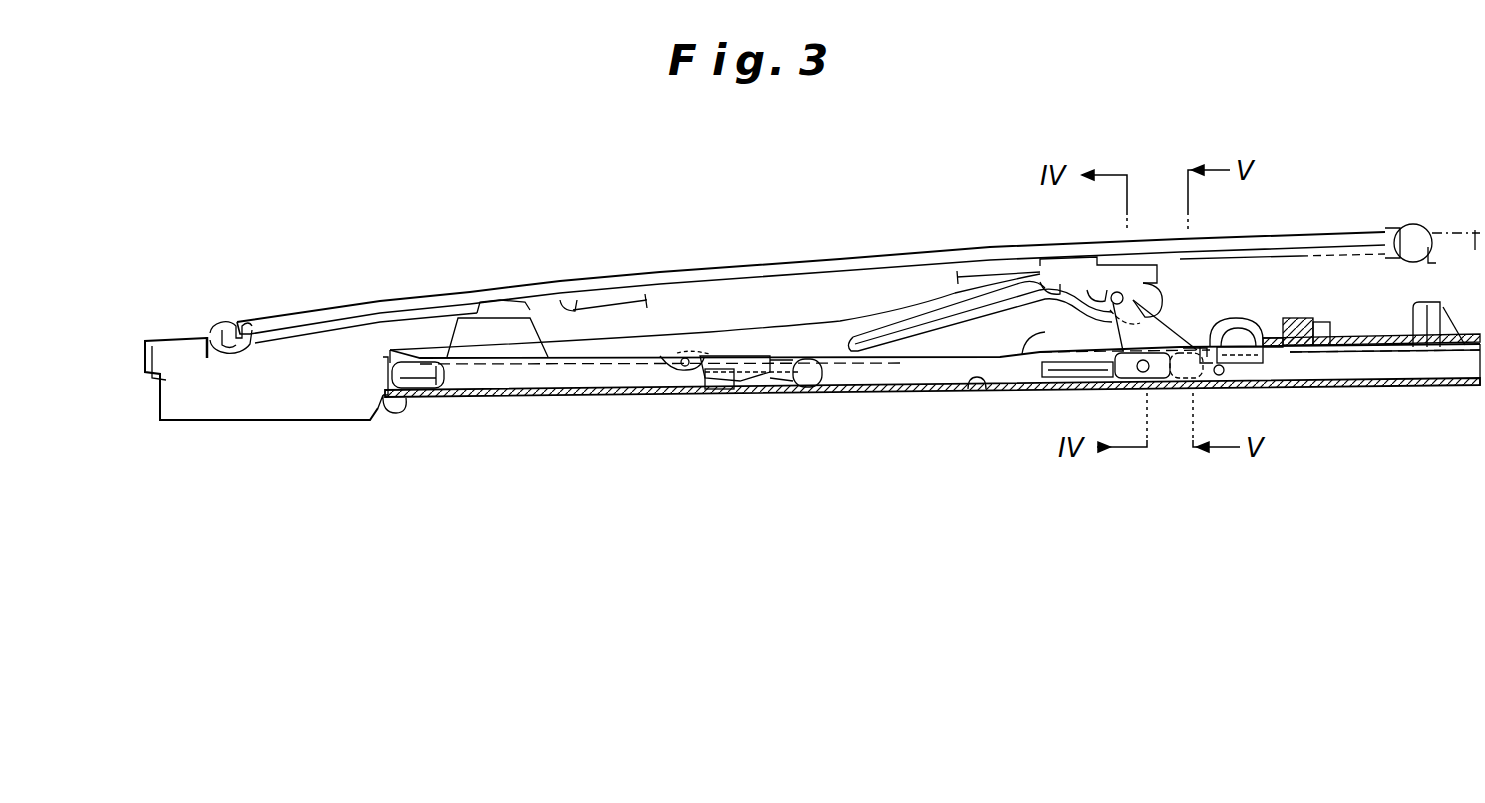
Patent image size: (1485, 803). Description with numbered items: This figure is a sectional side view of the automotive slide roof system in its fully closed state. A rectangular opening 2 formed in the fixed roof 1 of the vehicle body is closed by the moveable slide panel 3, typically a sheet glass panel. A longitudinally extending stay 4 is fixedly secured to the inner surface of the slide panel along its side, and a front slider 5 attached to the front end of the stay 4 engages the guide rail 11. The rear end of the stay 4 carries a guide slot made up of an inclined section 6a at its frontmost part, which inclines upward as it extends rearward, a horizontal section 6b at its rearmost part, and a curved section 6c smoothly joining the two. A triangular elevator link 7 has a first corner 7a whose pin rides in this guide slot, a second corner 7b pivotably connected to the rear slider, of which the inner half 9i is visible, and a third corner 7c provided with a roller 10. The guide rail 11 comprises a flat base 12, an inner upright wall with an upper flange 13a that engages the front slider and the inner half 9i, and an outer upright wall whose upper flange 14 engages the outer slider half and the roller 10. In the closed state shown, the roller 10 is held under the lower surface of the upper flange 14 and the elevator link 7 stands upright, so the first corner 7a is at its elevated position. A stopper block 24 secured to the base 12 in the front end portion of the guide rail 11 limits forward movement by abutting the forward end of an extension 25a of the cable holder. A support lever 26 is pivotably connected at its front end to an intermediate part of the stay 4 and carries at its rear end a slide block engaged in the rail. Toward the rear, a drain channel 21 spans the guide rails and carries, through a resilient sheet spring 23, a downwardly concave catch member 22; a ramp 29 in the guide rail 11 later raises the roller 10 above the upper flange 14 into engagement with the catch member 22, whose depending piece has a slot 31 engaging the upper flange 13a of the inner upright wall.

The fixed roof 1 is at (168, 341).
The rectangular opening 2 is at (218, 333).
The slide panel 3 is at (393, 302).
The stay 4 is at (637, 358).
The front slider 5 is at (377, 404).
The inclined section 6a is at (907, 327).
The horizontal section 6b is at (1096, 290).
The curved section 6c is at (1047, 285).
The elevator link 7 is at (1162, 326).
The first corner 7a is at (1122, 292).
The second corner 7b is at (1146, 375).
The third corner 7c is at (1198, 380).
The inner half of rear slider 9i is at (1124, 378).
The roller 10 is at (1201, 347).
The guide rail 11 is at (896, 394).
The flat base 12 is at (977, 380).
The upper flange of inner upright wall 13a is at (1323, 352).
The upper flange of outer upright wall 14 is at (737, 315).
The drain channel 21 is at (1357, 336).
The catch member 22 is at (1242, 318).
The sheet spring 23 is at (1268, 337).
The stopper block 24 is at (722, 382).
The extension 25a is at (1058, 379).
The support lever 26 is at (757, 354).
The ramp 29 is at (1222, 365).
The slot 31 is at (1262, 352).